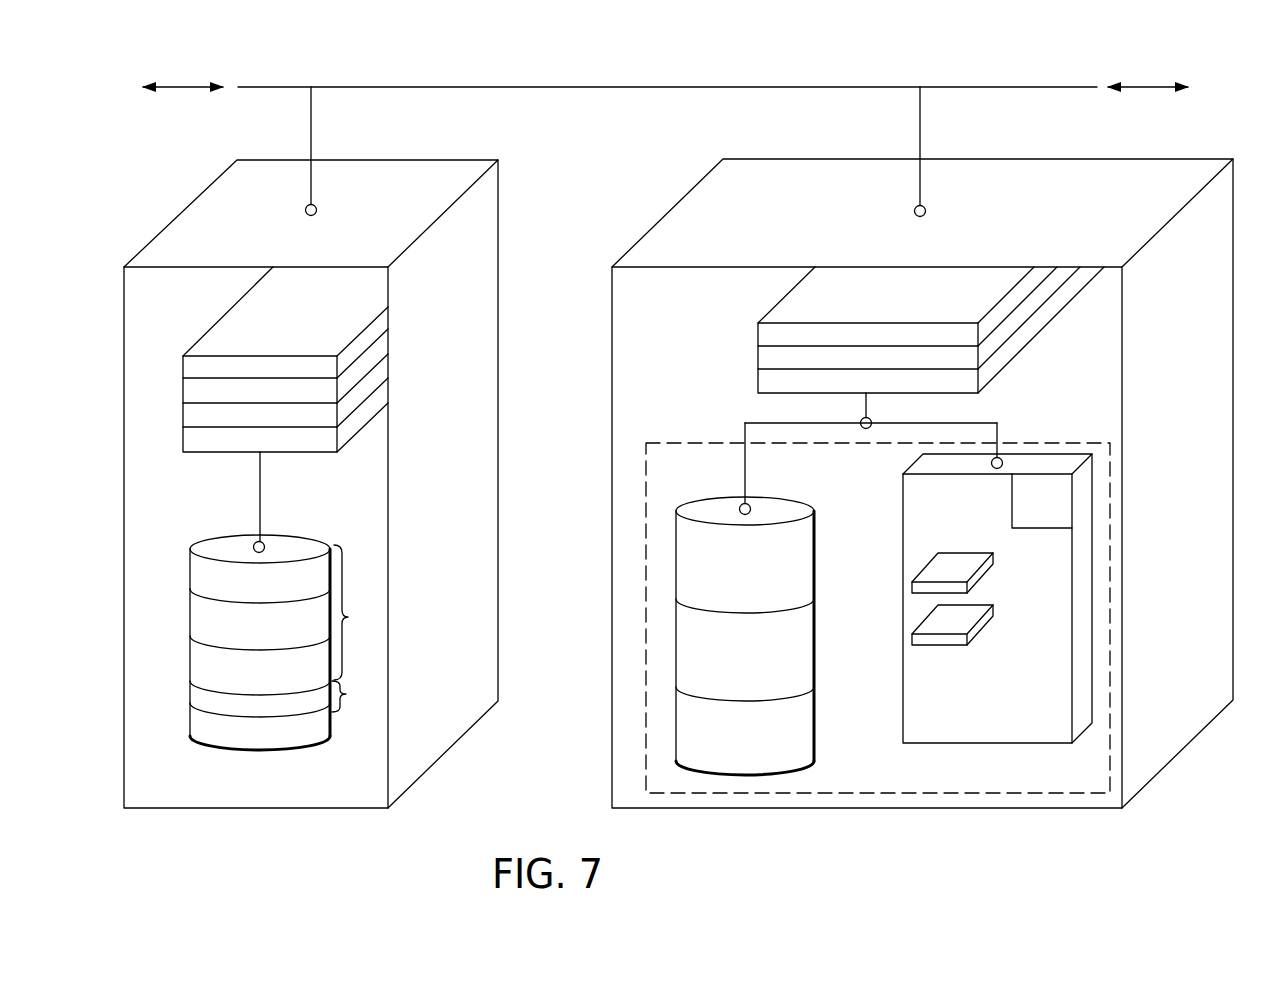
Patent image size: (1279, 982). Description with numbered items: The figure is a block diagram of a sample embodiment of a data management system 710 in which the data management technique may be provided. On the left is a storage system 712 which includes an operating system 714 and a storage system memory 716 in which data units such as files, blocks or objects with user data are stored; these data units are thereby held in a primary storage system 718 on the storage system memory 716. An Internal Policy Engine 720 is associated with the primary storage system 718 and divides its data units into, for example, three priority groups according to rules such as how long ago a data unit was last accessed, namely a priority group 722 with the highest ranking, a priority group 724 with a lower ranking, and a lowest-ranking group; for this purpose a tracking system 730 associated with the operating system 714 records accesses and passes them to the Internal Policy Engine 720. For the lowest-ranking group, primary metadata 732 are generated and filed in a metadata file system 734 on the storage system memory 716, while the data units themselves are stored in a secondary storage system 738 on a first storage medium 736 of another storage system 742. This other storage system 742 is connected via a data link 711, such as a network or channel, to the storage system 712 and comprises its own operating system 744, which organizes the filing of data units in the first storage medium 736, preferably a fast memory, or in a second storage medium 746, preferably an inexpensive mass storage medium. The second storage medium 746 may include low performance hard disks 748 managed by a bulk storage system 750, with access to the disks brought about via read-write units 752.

The data management system 710 is at (350, 40).
The data link 711 is at (627, 86).
The storage system 712 is at (222, 217).
The operating system 714 is at (180, 362).
The tracking system 730 is at (193, 415).
The Internal Policy Engine 720 is at (190, 443).
The storage system memory 716 is at (172, 610).
The priority group 722 is at (198, 575).
The priority group 724 is at (203, 628).
The primary metadata 732 is at (200, 698).
The primary storage system 718 is at (360, 612).
The metadata file system 734 is at (359, 696).
The other storage system 742 is at (702, 217).
The operating system 744 is at (767, 334).
The secondary storage system 738 is at (683, 443).
The first storage medium 736 is at (788, 652).
The second storage medium 746 is at (967, 728).
The read-write units 752 is at (1024, 504).
The low performance hard disks 748 is at (992, 565).
The bulk storage system 750 is at (1040, 468).